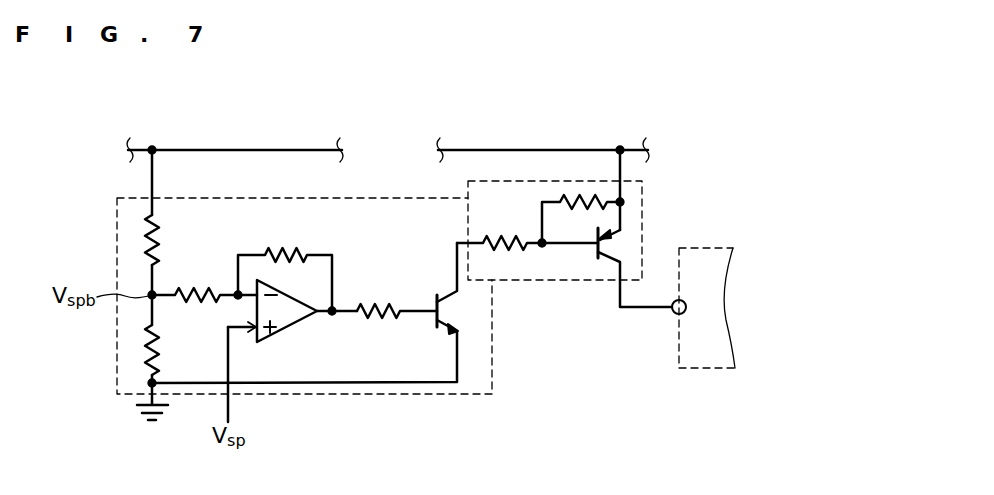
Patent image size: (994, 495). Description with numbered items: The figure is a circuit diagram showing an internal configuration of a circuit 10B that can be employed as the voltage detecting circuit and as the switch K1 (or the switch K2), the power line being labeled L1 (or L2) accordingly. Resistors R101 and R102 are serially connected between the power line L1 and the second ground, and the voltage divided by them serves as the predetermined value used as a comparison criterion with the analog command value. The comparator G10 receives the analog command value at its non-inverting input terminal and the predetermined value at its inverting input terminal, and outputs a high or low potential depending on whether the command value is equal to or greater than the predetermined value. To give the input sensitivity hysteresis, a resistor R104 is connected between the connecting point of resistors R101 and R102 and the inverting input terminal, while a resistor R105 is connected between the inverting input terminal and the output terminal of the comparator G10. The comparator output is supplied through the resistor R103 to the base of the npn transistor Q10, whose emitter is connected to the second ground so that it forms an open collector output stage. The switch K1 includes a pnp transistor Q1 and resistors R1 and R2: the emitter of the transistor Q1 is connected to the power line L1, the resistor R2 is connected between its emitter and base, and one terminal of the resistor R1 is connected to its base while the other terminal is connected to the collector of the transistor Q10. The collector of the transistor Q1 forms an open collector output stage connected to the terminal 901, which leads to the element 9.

The power line L1 is at (224, 151).
The power supply line L2 is at (492, 151).
The circuit 10B is at (496, 354).
The resistor R101 is at (160, 243).
The resistor R102 is at (160, 351).
The resistor R103 is at (380, 304).
The resistor R104 is at (210, 275).
The resistor R105 is at (290, 250).
The comparator G10 is at (275, 335).
The npn transistor Q10 is at (430, 322).
The switch K1 is at (615, 224).
The switch K2 is at (645, 190).
The resistor R1 is at (512, 236).
The resistor R2 is at (576, 207).
The pnp type transistor Q1 is at (596, 254).
The terminal 901 is at (675, 314).
The load 9 is at (708, 247).